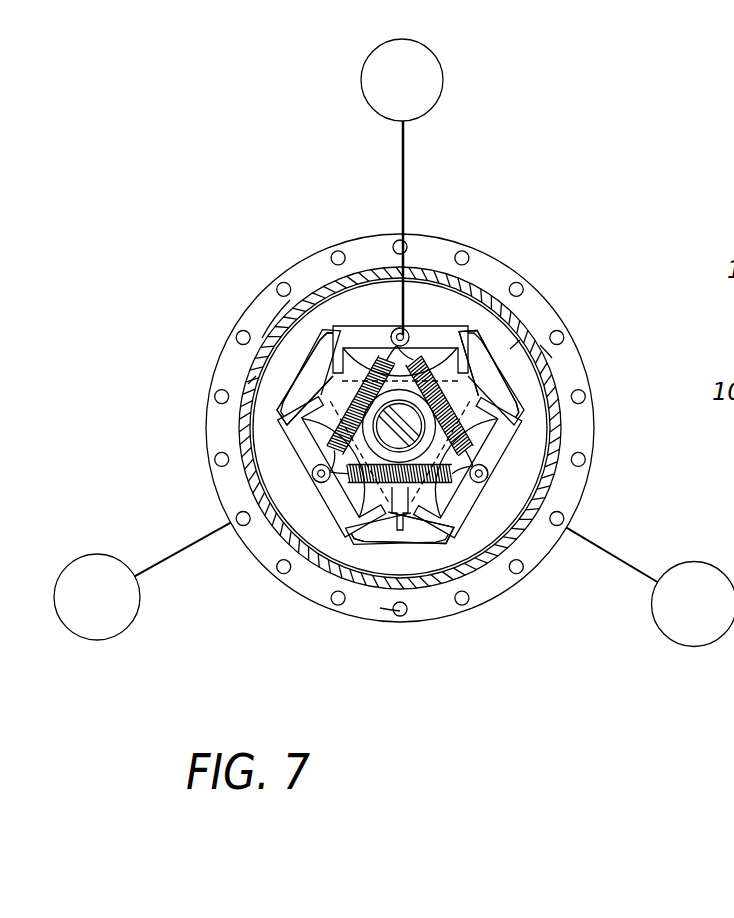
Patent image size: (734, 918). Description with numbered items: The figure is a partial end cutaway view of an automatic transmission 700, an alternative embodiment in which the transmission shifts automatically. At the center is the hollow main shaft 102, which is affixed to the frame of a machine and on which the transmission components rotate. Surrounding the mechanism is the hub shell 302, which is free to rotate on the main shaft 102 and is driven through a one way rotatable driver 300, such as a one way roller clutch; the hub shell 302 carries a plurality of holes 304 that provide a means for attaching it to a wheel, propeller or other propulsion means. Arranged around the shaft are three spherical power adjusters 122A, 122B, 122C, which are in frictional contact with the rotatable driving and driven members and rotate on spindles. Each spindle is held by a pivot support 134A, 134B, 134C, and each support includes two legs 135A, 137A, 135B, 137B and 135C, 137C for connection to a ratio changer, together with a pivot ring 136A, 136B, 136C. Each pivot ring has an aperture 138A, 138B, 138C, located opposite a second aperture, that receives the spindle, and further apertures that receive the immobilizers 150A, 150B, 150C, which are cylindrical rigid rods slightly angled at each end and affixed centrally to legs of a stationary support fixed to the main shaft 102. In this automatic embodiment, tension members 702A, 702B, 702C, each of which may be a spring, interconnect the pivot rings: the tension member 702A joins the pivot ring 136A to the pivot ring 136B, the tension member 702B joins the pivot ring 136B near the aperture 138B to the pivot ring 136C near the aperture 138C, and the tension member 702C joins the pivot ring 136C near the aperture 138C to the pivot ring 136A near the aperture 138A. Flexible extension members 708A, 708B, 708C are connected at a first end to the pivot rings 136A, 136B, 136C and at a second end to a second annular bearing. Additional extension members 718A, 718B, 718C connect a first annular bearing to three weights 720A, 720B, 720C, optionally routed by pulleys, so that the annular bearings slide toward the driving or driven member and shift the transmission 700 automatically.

The automatic transmission 700 is at (300, 138).
The main shaft 102 is at (207, 399).
The one way rotatable driver 300 is at (500, 345).
The hub shell 302 is at (434, 248).
The holes 304 is at (286, 284).
The weight 720A is at (436, 91).
The weight 720B is at (692, 642).
The weight 720C is at (82, 556).
The extension member 718A is at (403, 182).
The extension member 718B is at (602, 546).
The extension member 718C is at (163, 563).
The tension member 702A is at (490, 350).
The tension member 702B is at (445, 585).
The tension member 702C is at (285, 458).
The power adjuster 122A is at (410, 334).
The power adjuster 122B is at (560, 432).
The power adjuster 122C is at (258, 538).
The pivot support 134A is at (300, 385).
The pivot support 134B is at (560, 398).
The pivot support 134C is at (312, 610).
The leg 135A is at (470, 335).
The leg 135B is at (430, 568).
The leg 135C is at (262, 430).
The pivot ring 136A is at (350, 328).
The pivot ring 136B is at (520, 520).
The pivot ring 136C is at (258, 555).
The leg 137A is at (270, 332).
The leg 137B is at (550, 355).
The leg 137C is at (385, 612).
The aperture 138A is at (472, 342).
The aperture 138B is at (490, 472).
The aperture 138C is at (310, 474).
The flexible extension member 708A is at (388, 355).
The flexible extension member 708B is at (470, 480).
The flexible extension member 708C is at (335, 476).
The immobilizer 150A is at (515, 345).
The immobilizer 150B is at (420, 600).
The immobilizer 150C is at (250, 380).